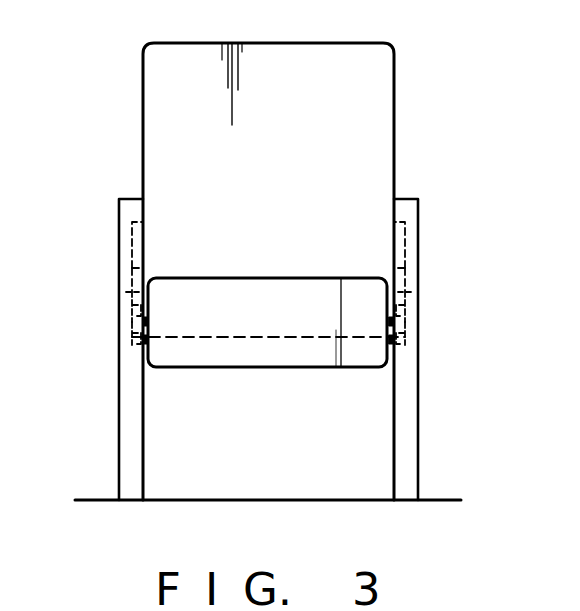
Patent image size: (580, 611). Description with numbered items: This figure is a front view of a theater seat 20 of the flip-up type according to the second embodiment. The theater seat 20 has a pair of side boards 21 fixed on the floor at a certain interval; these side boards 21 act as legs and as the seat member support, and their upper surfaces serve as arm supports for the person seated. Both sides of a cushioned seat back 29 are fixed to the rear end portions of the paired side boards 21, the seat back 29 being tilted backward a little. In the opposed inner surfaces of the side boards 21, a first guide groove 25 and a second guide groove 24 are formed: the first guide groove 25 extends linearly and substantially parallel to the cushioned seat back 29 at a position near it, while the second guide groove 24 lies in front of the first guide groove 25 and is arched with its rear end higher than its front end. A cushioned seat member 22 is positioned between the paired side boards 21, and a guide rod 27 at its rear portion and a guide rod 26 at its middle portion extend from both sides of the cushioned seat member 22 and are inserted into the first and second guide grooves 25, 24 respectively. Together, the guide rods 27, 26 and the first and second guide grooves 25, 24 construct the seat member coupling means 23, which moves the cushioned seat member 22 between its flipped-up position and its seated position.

The theater seat 20 is at (397, 161).
The side boards 21 is at (126, 407).
The cushioned seat member 22 is at (278, 292).
The seat member coupling means 23 is at (127, 292).
The second guide groove 24 is at (130, 270).
The first guide groove 25 is at (130, 237).
The guide rod 26 is at (128, 307).
The guide rod 27 is at (127, 335).
The cushioned seat back 29 is at (381, 63).